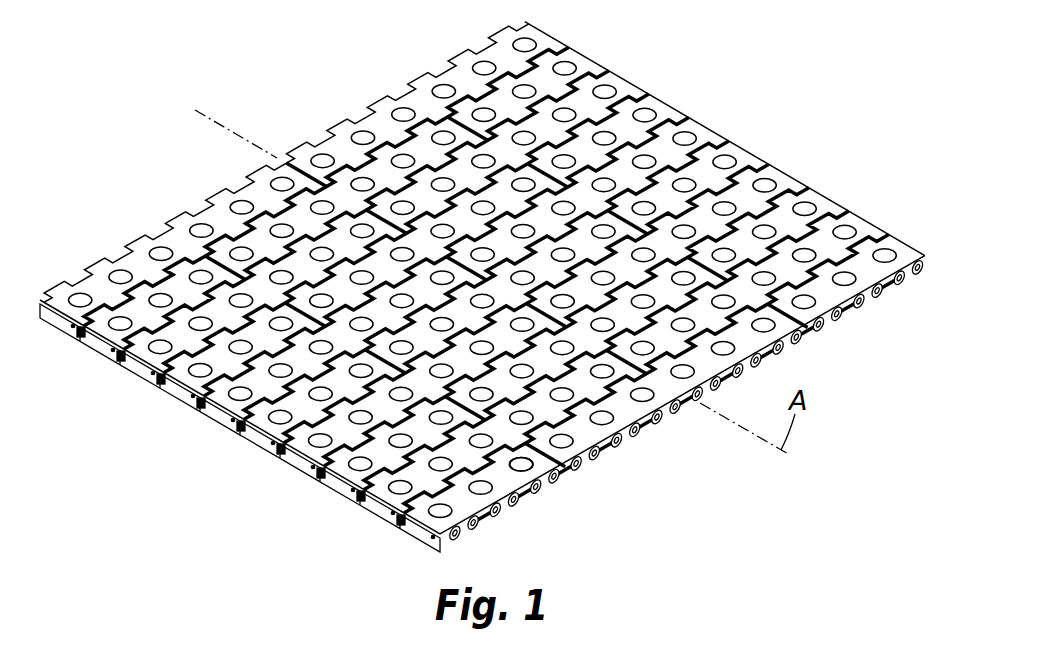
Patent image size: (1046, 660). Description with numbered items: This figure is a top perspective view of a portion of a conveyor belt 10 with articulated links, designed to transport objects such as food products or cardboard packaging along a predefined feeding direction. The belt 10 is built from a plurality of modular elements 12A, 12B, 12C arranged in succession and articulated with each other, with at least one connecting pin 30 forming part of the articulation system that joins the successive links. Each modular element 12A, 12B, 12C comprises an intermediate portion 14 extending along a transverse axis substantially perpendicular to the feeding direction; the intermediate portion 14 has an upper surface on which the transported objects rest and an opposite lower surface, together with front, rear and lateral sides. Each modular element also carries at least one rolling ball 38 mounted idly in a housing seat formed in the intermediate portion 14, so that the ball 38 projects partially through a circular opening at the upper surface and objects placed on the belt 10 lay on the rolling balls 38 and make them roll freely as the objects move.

The conveyor belt with articulated links 10 is at (500, 309).
The modular element 12A is at (912, 241).
The modular element 12B is at (870, 218).
The modular element 12C is at (826, 196).
The intermediate portion 14 is at (627, 401).
The connecting pin 30 is at (362, 497).
The rolling ball 38 is at (523, 462).